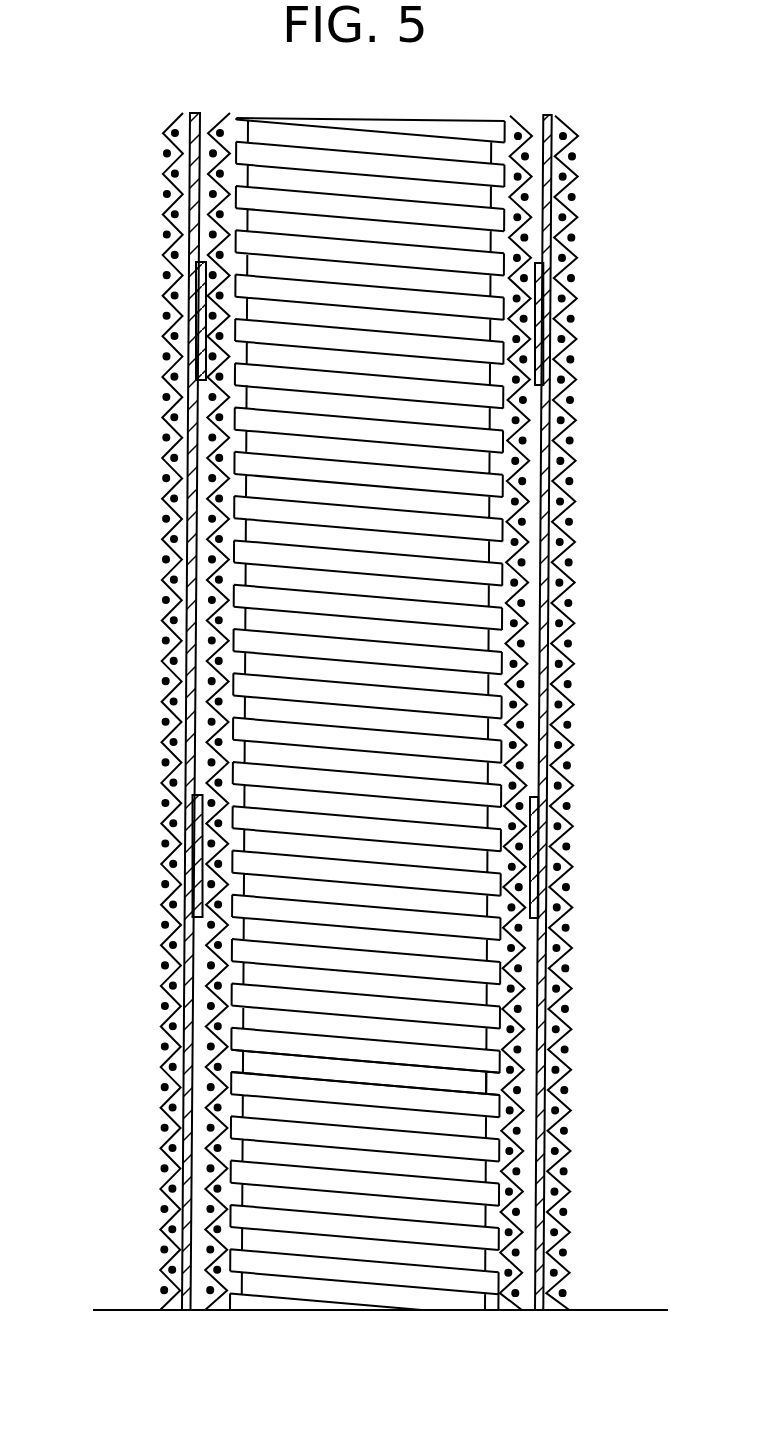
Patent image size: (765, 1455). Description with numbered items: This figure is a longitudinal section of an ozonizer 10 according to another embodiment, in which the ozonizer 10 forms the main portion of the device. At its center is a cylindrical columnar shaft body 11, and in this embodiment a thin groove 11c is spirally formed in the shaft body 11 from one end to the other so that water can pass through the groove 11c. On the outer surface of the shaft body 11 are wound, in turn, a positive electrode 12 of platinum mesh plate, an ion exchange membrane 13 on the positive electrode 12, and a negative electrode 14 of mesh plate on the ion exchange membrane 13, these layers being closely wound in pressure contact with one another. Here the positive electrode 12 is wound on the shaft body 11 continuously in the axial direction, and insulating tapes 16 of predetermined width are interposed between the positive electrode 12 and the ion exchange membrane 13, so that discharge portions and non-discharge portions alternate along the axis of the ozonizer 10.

The ozonizer 10 is at (126, 209).
The columnar shaft body 11 is at (258, 562).
The groove 11c is at (252, 1060).
The positive electrode 12 is at (223, 505).
The ion exchange membrane 13 is at (548, 148).
The negative electrode 14 is at (568, 330).
The insulating tape 16 is at (200, 352).